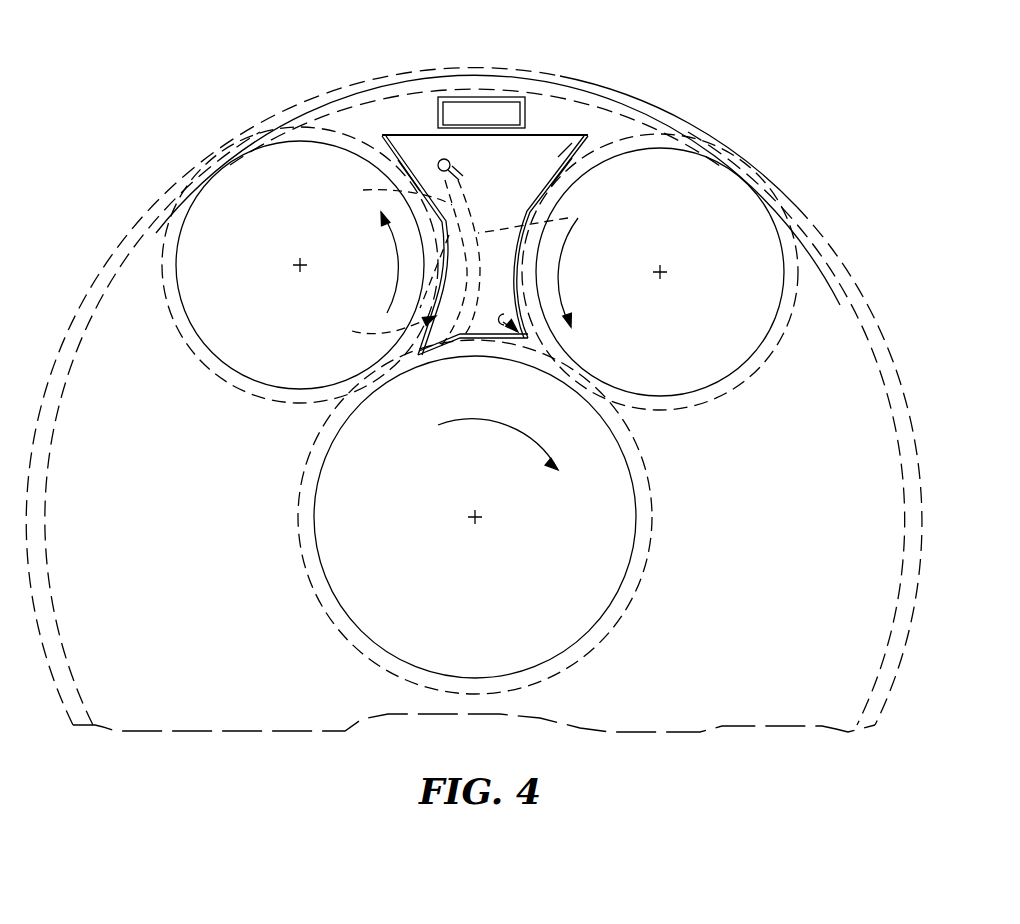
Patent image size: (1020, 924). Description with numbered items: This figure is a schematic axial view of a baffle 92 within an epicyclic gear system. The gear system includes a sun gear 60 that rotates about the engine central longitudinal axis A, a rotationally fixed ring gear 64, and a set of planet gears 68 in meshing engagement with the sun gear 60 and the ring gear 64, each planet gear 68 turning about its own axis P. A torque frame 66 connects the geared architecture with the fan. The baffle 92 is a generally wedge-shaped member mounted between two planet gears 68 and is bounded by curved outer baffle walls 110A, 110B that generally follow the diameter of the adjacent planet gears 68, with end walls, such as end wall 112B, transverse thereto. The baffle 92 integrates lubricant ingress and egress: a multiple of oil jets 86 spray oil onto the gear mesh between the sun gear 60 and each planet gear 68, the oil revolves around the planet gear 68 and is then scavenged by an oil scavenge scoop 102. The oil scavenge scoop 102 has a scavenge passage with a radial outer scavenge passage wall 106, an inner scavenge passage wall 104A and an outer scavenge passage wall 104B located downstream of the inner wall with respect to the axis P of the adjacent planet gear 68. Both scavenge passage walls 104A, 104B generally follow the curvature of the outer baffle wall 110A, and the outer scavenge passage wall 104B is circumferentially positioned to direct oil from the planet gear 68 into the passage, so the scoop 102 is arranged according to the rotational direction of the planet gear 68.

The sun gear 60 is at (590, 558).
The ring gear 64 is at (651, 112).
The torque frame 66 is at (484, 112).
The planet gears 68 is at (222, 272).
The oil jets 86 is at (505, 345).
The baffle 92 is at (417, 131).
The oil scavenge scoop 102 is at (371, 325).
The inner scavenge passage wall 104A is at (394, 262).
The outer scavenge passage wall 104B is at (552, 220).
The radial outer scavenge passage wall 106 is at (462, 179).
The outer baffle wall 110A is at (403, 167).
The outer baffle wall 110B is at (567, 170).
The end wall 112B is at (558, 157).
The axis of the planet gear P is at (298, 263).
The engine central longitudinal axis A is at (472, 519).